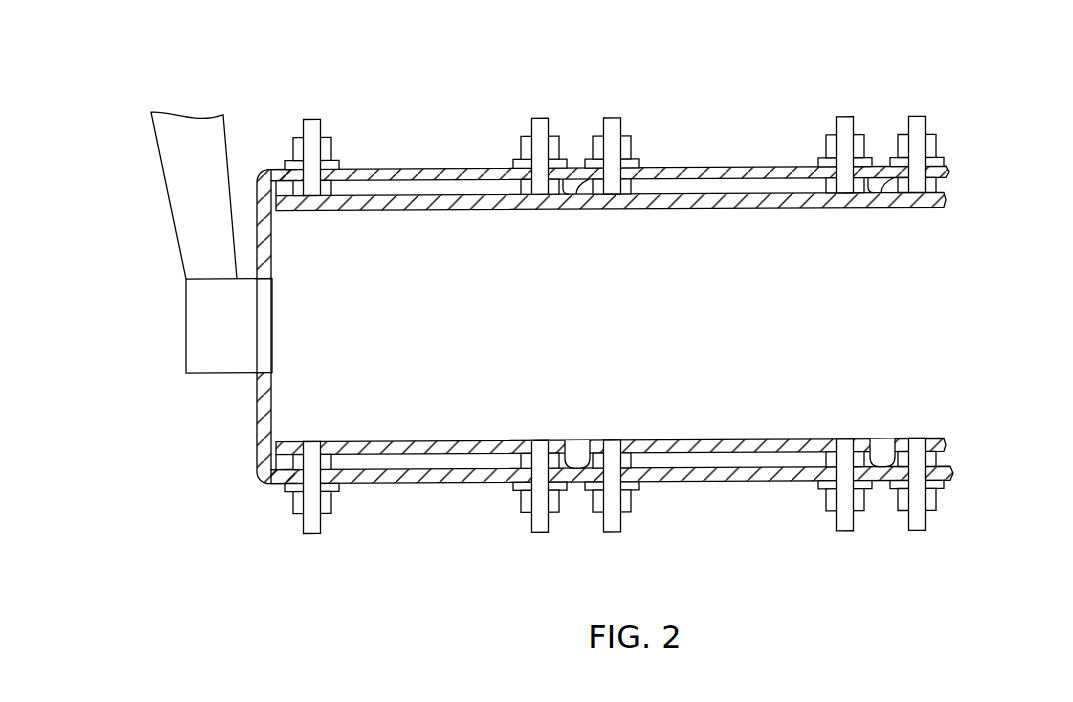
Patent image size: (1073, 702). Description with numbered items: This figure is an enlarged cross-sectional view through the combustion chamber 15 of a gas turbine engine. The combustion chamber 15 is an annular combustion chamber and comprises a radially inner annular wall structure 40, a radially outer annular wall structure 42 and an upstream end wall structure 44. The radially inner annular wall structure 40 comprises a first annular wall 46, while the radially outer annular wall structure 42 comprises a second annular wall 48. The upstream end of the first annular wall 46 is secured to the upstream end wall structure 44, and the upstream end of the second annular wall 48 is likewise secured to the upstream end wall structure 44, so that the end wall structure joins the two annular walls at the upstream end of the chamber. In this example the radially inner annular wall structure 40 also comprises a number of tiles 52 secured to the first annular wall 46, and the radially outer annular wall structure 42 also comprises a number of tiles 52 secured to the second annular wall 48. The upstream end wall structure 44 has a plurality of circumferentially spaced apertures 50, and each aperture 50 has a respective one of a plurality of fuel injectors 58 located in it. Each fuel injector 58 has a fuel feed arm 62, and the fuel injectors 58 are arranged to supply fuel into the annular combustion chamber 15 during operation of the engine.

The combustion chamber 15 is at (580, 272).
The radially inner annular wall structure 40 is at (973, 478).
The radially outer annular wall structure 42 is at (973, 158).
The upstream end wall structure 44 is at (262, 423).
The first annular wall 46 is at (797, 482).
The second annular wall 48 is at (763, 165).
The aperture 50 is at (272, 287).
The tiles 52 is at (663, 210).
The fuel injector 58 is at (205, 317).
The fuel feed arm 62 is at (185, 193).